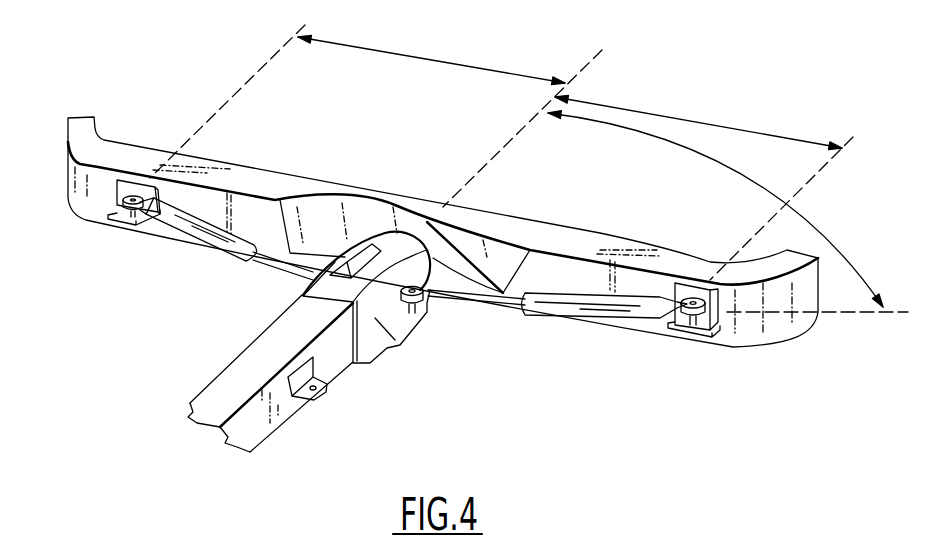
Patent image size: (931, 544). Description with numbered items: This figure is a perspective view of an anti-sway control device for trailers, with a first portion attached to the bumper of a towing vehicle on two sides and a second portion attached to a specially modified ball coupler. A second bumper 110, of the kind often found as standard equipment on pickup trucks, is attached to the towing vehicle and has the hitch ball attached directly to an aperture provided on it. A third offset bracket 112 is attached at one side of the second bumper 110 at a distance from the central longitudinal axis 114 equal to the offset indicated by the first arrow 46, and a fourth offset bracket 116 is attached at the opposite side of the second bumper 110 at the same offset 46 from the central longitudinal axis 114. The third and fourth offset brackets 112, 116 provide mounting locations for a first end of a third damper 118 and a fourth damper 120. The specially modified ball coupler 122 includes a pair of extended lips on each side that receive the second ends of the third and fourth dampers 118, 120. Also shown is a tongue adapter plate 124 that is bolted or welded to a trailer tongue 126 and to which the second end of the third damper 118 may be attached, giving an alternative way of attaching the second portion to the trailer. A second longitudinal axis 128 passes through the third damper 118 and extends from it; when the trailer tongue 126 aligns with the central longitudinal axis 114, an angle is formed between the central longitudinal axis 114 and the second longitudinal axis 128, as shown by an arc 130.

The first arrow 46 is at (452, 63).
The second bumper 110 is at (272, 168).
The third offset bracket 112 is at (730, 318).
The central longitudinal axis 114 is at (602, 50).
The fourth offset bracket 116 is at (112, 198).
The third damper 118 is at (583, 310).
The fourth damper 120 is at (196, 232).
The specially modified ball coupler 122 is at (375, 318).
The tongue adapter plate 124 is at (325, 393).
The trailer tongue 126 is at (205, 392).
The second longitudinal axis 128 is at (870, 322).
The arc 130 is at (815, 240).